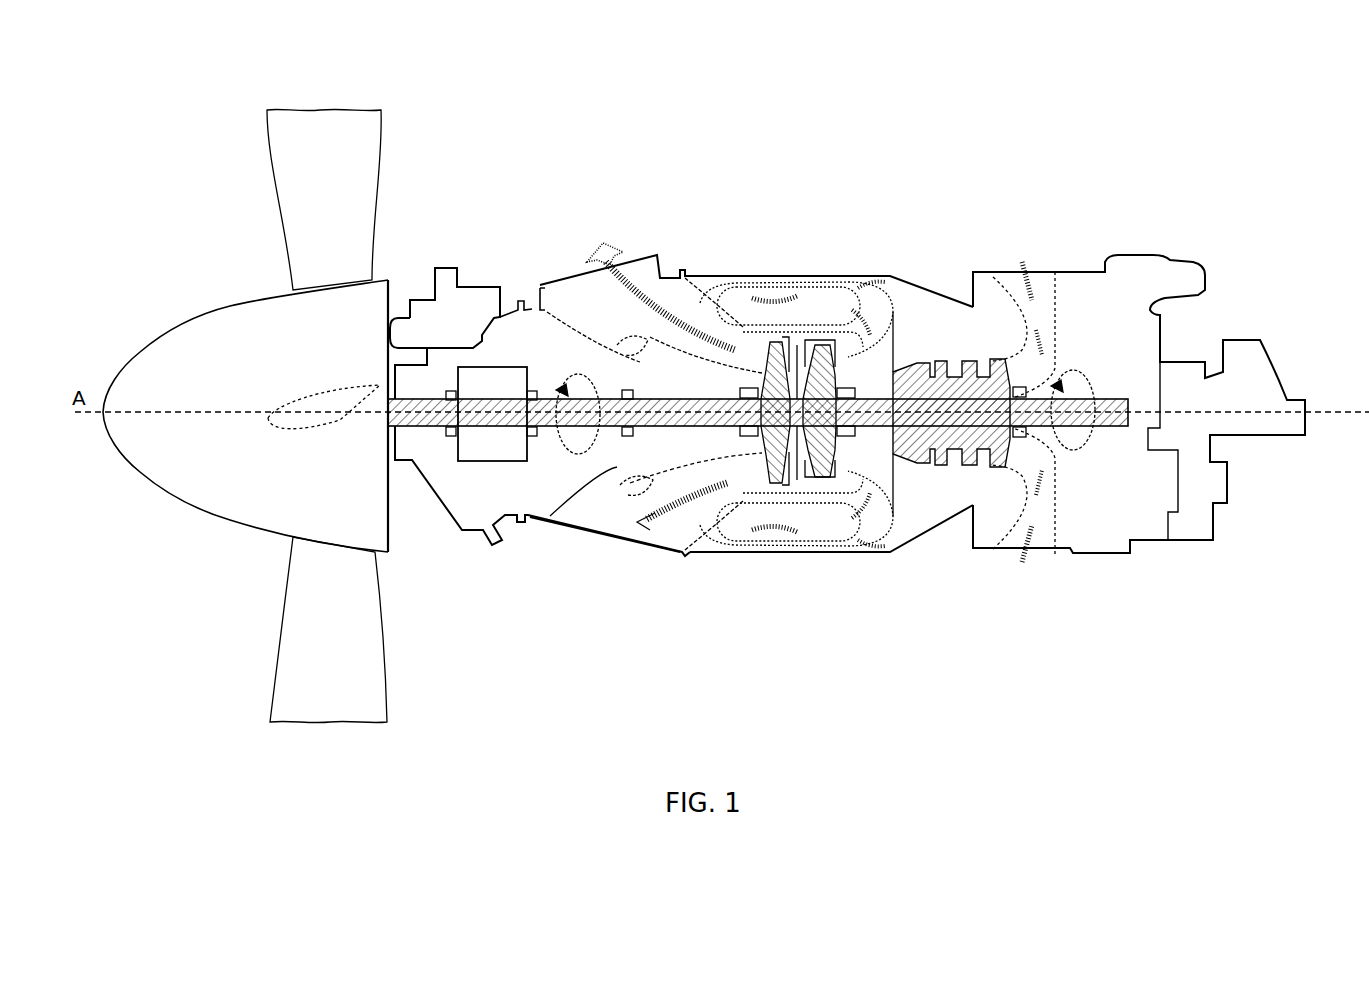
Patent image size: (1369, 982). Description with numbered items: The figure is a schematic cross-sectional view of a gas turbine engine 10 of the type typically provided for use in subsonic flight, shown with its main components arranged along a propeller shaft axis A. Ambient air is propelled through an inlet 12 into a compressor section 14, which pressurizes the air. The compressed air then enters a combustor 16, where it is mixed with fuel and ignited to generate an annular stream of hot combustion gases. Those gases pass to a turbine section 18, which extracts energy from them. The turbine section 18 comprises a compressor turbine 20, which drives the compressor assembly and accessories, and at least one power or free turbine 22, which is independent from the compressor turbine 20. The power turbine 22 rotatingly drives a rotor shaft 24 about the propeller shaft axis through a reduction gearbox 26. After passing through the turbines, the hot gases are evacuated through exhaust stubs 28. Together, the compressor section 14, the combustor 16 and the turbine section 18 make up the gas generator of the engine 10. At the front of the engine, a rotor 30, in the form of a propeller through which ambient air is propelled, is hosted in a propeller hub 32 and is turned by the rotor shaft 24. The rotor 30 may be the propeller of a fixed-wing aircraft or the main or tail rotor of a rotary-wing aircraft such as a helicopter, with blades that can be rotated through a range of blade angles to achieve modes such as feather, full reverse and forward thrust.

The gas turbine engine 10 is at (714, 170).
The inlet 12 is at (1032, 258).
The compressor section 14 is at (930, 305).
The combustor 16 is at (828, 300).
The turbine section 18 is at (798, 415).
The compressor turbine 20 is at (822, 412).
The power or free turbine 22 is at (780, 412).
The rotor shaft 24 is at (510, 452).
The reduction gearbox 26 is at (492, 417).
The exhaust stubs 28 is at (580, 252).
The rotor 30 is at (298, 177).
The propeller hub 32 is at (225, 334).